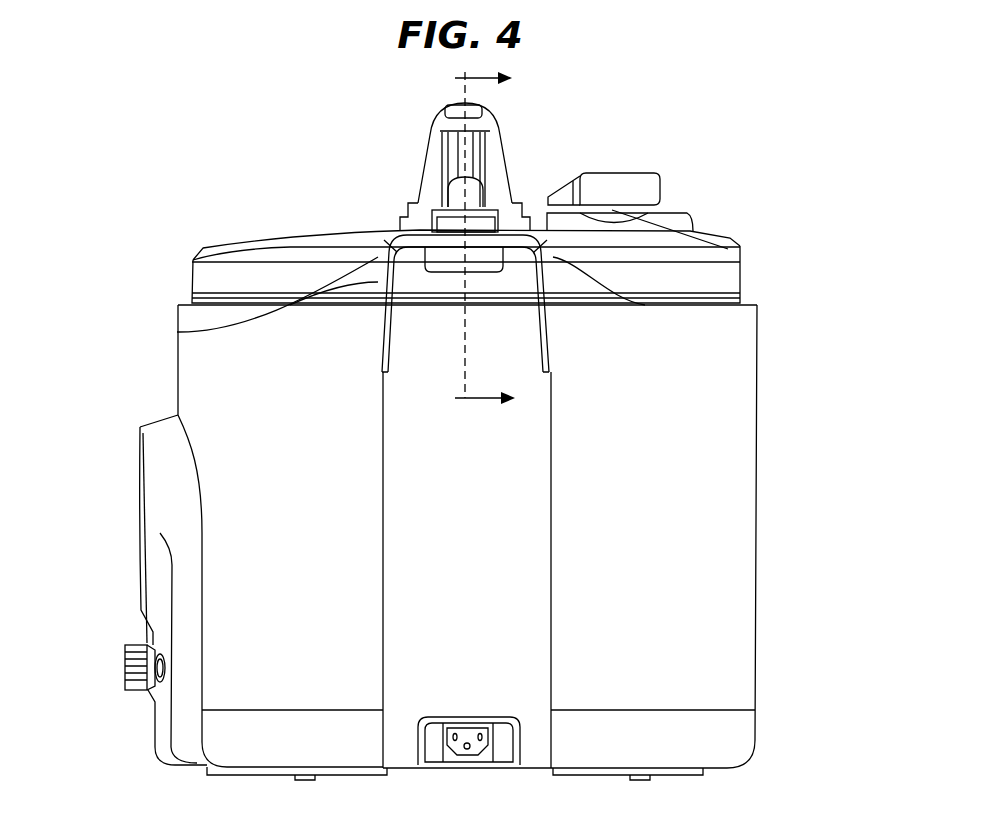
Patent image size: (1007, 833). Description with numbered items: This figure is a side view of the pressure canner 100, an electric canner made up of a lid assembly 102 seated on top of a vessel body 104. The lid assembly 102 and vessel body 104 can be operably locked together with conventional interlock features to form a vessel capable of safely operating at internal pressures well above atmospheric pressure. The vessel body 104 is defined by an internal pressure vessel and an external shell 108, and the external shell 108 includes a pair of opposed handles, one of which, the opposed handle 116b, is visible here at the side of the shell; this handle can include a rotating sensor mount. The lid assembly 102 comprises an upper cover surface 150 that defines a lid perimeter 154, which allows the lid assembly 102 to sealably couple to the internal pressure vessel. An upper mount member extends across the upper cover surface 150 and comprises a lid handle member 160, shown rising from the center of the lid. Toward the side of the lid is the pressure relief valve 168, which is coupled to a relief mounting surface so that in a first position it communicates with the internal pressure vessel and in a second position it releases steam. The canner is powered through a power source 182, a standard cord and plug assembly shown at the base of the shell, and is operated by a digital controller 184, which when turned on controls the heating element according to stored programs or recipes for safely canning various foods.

The pressure canner 100 is at (198, 140).
The lid assembly 102 is at (192, 260).
The vessel body 104 is at (757, 590).
The external shell 108 is at (727, 667).
The opposed handle 116b is at (177, 332).
The upper cover surface 150 is at (358, 238).
The lid perimeter 154 is at (192, 280).
The lid handle member 160 is at (440, 104).
The pressure relief valve 168 is at (624, 188).
The power source 182 is at (487, 755).
The digital controller 184 is at (128, 645).